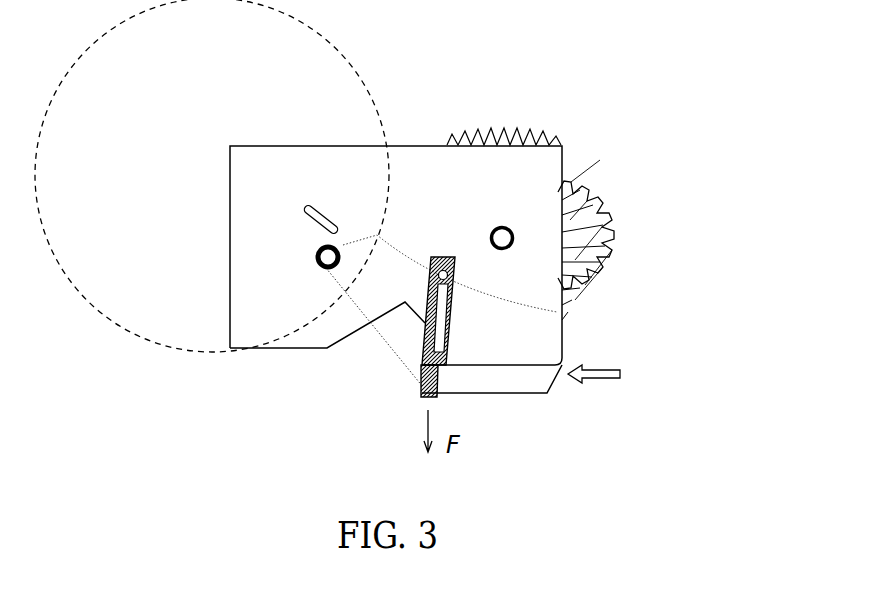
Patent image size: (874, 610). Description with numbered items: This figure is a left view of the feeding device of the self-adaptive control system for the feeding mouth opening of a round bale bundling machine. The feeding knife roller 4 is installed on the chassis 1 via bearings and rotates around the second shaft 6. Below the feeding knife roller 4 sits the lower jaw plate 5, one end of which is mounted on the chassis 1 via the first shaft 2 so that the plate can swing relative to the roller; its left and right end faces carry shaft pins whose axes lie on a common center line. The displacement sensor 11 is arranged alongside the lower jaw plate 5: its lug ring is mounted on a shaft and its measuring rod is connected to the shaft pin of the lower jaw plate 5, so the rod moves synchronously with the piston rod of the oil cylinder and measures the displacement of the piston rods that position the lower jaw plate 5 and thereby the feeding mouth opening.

The chassis 1 is at (267, 195).
The first shaft 2 is at (335, 243).
The feeding knife roller 4 is at (613, 247).
The lower jaw plate 5 is at (535, 377).
The second shaft 6 is at (512, 224).
The displacement sensor 11 is at (427, 349).